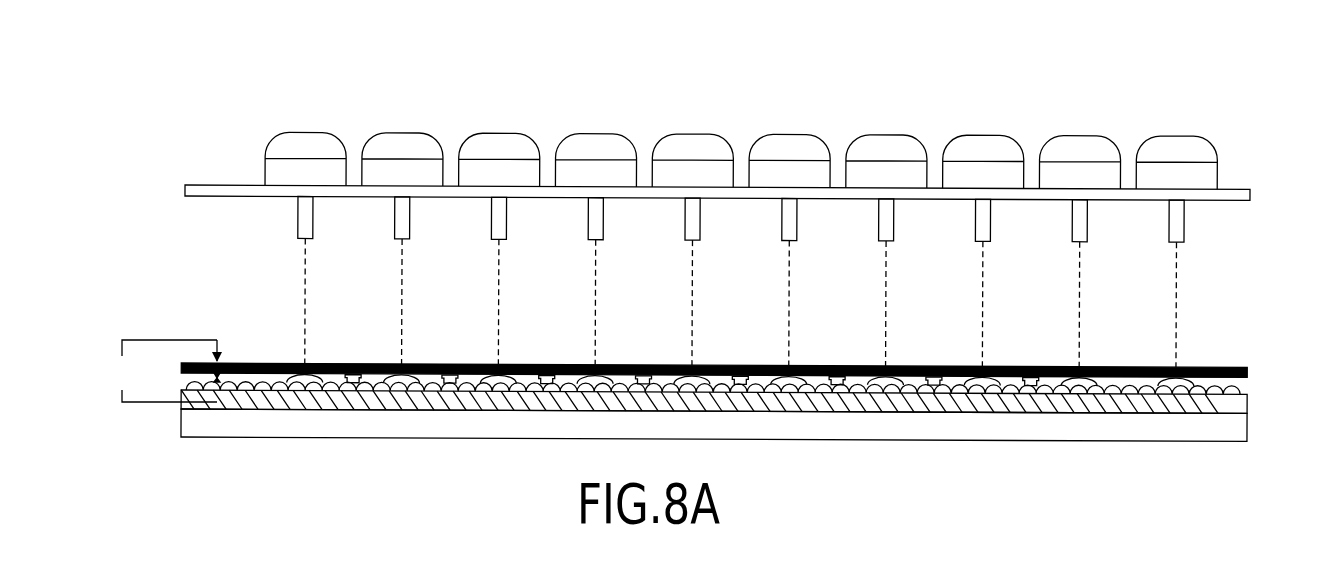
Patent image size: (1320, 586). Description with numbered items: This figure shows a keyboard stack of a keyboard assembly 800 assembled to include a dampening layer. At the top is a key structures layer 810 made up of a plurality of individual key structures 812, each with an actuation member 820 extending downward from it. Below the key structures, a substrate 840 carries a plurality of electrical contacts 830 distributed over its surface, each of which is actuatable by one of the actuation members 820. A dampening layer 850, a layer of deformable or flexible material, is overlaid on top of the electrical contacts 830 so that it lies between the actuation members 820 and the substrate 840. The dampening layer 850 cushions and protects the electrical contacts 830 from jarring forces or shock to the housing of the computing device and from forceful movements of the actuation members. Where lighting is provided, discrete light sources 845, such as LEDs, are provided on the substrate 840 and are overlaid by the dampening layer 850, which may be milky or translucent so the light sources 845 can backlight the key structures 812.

The keyboard assembly 800 is at (191, 94).
The key structures layer 810 is at (175, 132).
The key structure 812 is at (1176, 133).
The actuation member 820 is at (295, 220).
The electrical contact 830 is at (308, 387).
The substrate 840 is at (1265, 405).
The light source 845 is at (835, 387).
The dampening layer 850 is at (1265, 355).